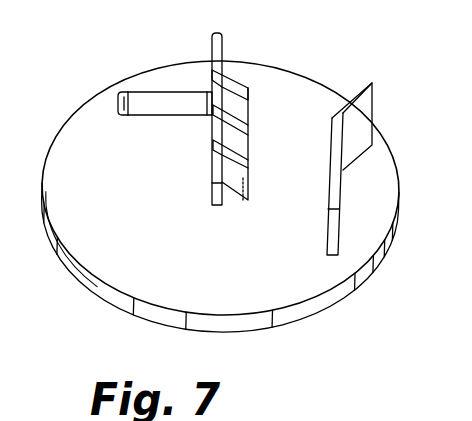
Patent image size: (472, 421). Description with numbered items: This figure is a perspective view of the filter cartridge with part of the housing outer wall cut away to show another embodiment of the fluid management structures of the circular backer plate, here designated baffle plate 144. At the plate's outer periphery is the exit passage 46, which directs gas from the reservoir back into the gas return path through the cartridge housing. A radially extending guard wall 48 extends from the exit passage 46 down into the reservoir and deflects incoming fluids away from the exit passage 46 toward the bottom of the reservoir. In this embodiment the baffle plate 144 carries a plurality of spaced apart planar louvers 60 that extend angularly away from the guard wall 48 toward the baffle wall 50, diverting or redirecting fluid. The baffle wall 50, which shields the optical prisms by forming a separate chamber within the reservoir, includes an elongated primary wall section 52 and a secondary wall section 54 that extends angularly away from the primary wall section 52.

The baffle plate 144 is at (41, 165).
The exit passage 46 is at (117, 99).
The guard wall 48 is at (209, 161).
The planar louvers 60 is at (244, 84).
The baffle wall 50 is at (377, 159).
The secondary wall section 54 is at (360, 125).
The primary wall section 52 is at (340, 210).